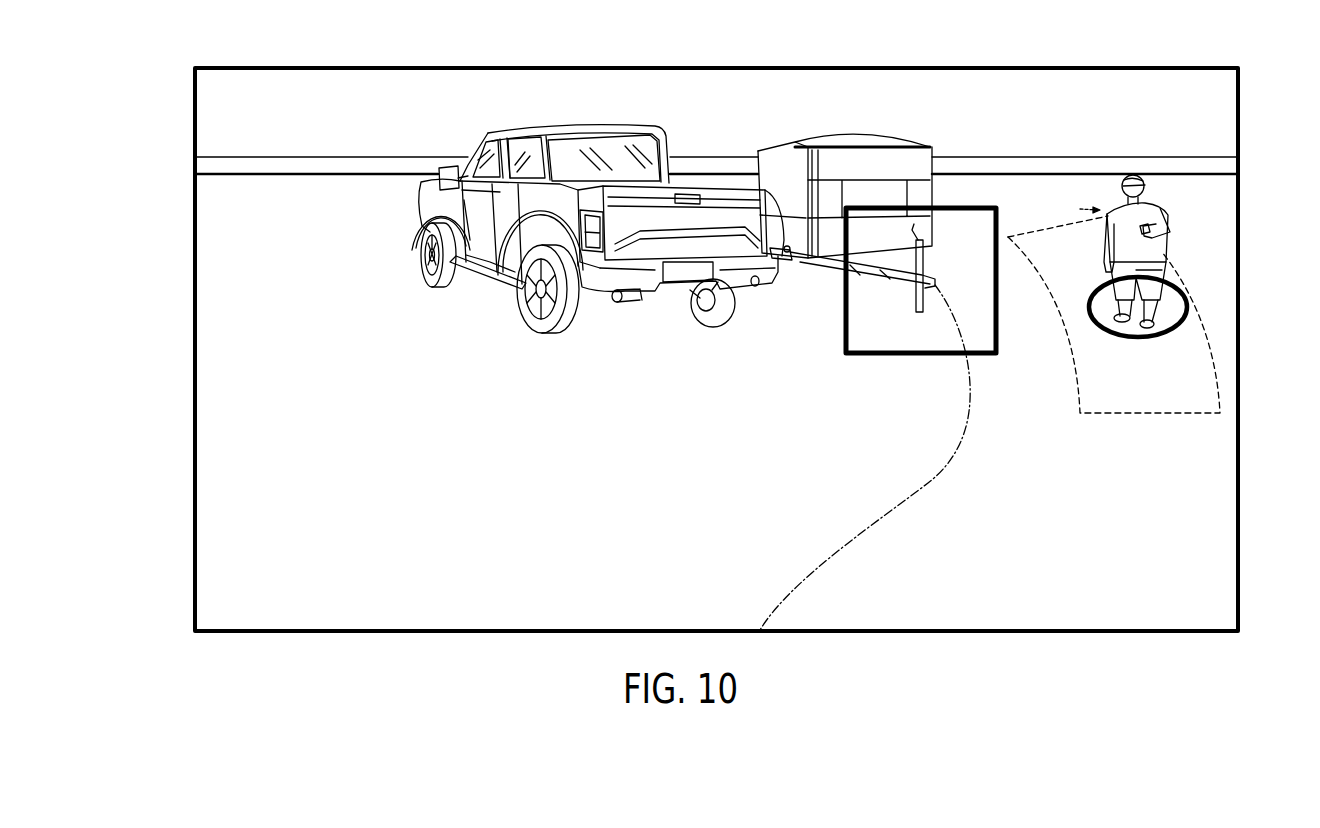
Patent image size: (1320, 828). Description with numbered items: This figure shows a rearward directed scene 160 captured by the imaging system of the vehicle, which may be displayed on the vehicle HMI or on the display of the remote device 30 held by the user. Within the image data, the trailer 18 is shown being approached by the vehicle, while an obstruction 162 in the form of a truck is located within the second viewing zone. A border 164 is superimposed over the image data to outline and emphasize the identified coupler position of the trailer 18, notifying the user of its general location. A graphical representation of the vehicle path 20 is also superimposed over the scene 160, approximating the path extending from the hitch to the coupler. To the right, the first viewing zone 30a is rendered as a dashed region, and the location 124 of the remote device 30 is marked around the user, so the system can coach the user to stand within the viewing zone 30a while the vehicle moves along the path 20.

The rearward directed scene 160 is at (250, 97).
The obstruction 162 is at (476, 128).
The trailer 18 is at (903, 116).
The border 164 is at (962, 208).
The vehicle path 20 is at (928, 483).
The remote device 30 is at (1149, 230).
The first viewing zone 30a is at (1167, 404).
The location of the remote device 124 is at (1188, 310).